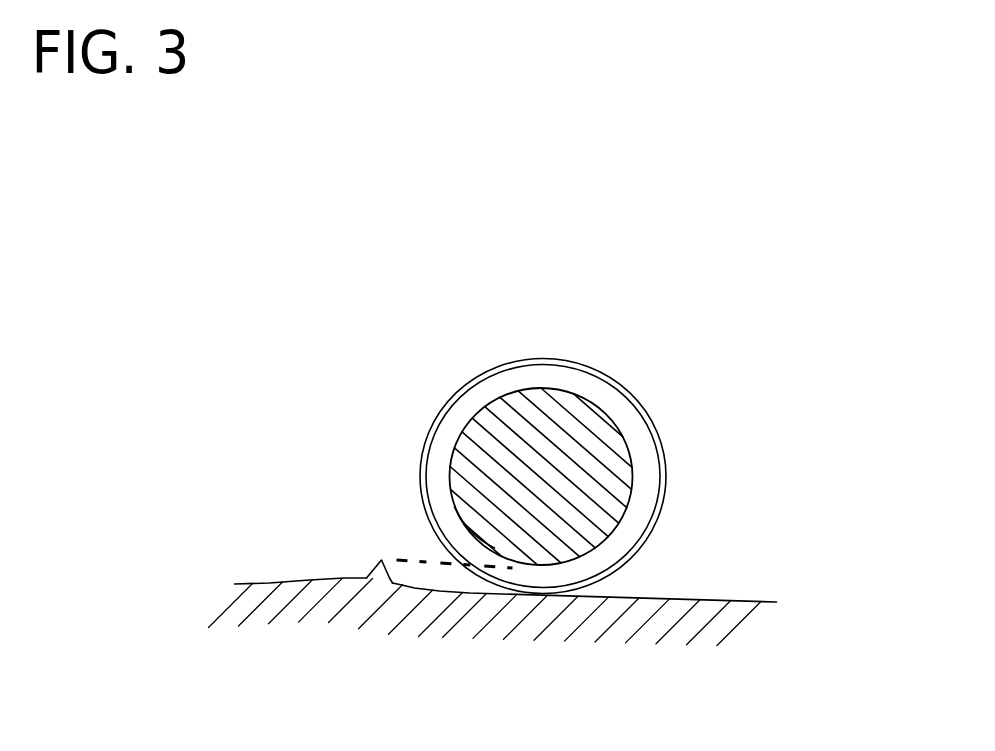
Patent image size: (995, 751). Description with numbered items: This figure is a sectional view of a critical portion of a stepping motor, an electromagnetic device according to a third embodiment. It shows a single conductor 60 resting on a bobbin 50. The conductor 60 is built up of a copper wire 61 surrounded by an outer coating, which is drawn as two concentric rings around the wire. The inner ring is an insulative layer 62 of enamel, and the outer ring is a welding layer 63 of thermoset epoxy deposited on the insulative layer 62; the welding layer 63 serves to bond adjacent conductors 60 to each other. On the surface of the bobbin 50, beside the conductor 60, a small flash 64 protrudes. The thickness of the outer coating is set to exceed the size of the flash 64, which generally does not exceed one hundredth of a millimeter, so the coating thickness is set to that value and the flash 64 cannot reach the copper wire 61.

The bobbin 50 is at (669, 612).
The conductor 60 is at (610, 456).
The copper wire 61 is at (595, 453).
The insulative layer 62 is at (607, 400).
The welding layer 63 is at (593, 370).
The flash 64 is at (382, 560).